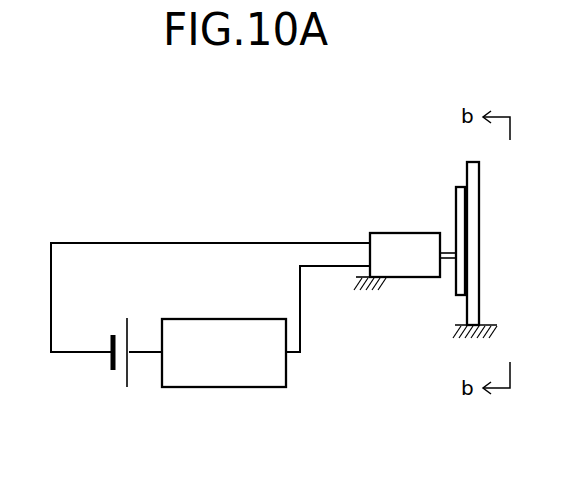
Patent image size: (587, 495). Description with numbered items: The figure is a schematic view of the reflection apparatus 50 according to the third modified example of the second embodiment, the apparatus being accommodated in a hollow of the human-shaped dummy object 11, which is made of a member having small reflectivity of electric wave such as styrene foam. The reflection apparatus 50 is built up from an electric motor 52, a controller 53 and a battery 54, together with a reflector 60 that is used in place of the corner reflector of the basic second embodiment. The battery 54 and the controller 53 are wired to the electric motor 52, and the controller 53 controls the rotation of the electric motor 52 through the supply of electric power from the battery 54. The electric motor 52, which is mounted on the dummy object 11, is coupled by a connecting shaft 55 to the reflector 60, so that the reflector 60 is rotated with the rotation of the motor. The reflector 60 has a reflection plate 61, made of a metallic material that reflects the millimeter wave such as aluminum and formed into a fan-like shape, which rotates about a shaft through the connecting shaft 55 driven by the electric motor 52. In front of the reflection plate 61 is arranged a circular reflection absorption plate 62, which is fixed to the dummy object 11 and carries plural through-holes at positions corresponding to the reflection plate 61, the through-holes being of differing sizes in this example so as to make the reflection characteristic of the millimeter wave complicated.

The dummy object 11 is at (385, 280).
The reflection apparatus 50 is at (299, 374).
The electric motor 52 is at (386, 233).
The controller 53 is at (217, 387).
The battery 54 is at (127, 375).
The connecting shaft 55 is at (450, 250).
The reflector 60 is at (459, 220).
The reflection plate 61 is at (455, 268).
The reflection absorption plate 62 is at (480, 277).